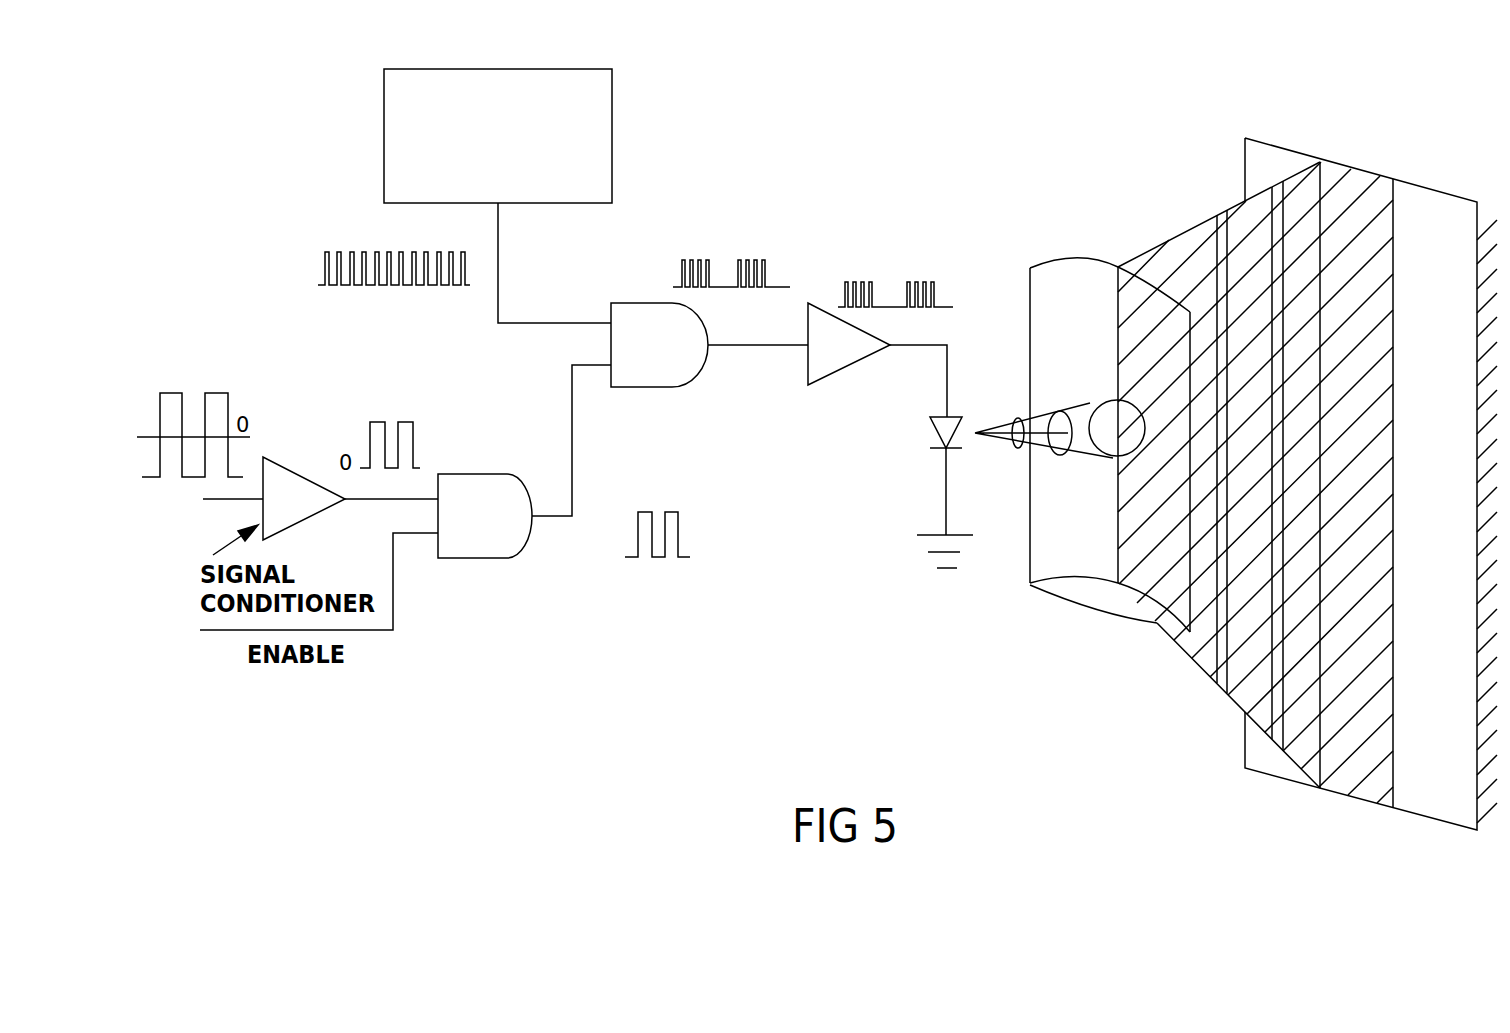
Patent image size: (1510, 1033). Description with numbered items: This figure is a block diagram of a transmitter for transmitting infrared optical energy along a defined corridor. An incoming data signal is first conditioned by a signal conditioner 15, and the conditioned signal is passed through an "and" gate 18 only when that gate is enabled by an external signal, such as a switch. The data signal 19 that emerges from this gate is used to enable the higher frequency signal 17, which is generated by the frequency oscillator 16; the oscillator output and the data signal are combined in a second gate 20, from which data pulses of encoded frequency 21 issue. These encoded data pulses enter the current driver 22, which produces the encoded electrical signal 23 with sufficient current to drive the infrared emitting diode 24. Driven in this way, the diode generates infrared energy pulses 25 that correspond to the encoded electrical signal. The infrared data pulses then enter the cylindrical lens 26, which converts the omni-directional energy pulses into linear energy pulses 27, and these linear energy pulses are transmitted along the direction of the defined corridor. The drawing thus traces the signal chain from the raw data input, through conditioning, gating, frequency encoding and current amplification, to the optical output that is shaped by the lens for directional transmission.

The signal conditioner 15 is at (304, 498).
The frequency oscillator 16 is at (498, 123).
The higher frequency signal 17 is at (370, 239).
The "and" gate 18 is at (485, 516).
The data signal 19 is at (647, 555).
The gate 20 is at (659, 345).
The data pulses of encoded frequency 21 is at (737, 246).
The current driver 22 is at (849, 344).
The encoded electrical signal 23 is at (897, 255).
The infrared emitting diode 24 is at (930, 428).
The infrared energy pulses 25 is at (1004, 398).
The cylindrical lens 26 is at (1100, 590).
The linear energy pulses 27 is at (1251, 175).